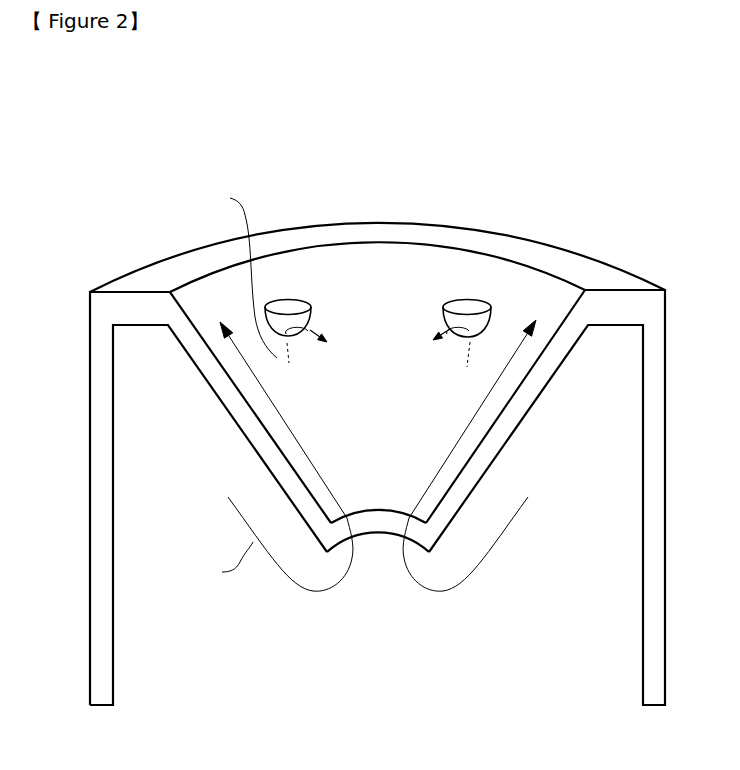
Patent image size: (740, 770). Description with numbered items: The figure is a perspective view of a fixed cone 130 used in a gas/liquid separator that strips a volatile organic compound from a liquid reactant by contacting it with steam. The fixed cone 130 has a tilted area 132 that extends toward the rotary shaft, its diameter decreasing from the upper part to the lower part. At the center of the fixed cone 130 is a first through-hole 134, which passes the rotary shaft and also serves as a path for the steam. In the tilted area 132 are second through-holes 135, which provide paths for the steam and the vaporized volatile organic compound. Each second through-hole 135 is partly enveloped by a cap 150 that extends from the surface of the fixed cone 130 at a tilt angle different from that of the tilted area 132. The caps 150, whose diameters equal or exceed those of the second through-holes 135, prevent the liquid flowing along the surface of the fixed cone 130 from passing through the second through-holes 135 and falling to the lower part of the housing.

The fixed cone 130 is at (115, 160).
The tilted area 132 is at (552, 295).
The first through-hole 134 is at (393, 523).
The second through-hole 135 is at (322, 313).
The cap 150 is at (290, 308).